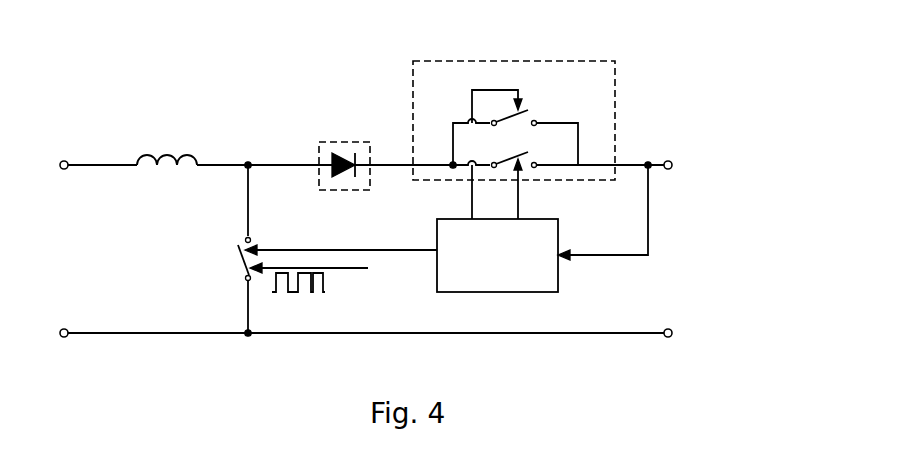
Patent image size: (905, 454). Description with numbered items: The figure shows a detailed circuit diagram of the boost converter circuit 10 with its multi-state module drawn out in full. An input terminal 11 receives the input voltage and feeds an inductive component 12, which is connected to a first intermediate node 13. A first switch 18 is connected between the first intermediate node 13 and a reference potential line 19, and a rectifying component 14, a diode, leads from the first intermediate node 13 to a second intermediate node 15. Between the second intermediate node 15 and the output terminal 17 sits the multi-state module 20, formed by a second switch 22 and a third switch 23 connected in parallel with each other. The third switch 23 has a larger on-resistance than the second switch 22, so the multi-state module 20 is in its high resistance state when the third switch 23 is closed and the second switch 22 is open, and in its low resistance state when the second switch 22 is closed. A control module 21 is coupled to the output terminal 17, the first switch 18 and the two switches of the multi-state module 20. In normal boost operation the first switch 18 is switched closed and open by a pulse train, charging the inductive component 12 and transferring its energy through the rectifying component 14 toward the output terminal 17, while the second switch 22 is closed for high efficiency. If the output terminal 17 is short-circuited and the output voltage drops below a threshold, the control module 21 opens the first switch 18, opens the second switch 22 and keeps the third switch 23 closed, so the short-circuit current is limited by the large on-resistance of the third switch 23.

The circuit 10 is at (692, 132).
The input terminal 11 is at (63, 160).
The inductive component 12 is at (176, 153).
The first intermediate node 13 is at (250, 162).
The rectifying component 14 is at (369, 148).
The second intermediate node 15 is at (451, 163).
The output terminal 17 is at (666, 161).
The first switch 18 is at (240, 268).
The reference potential line 19 is at (156, 333).
The multi-state module 20 is at (593, 71).
The control module 21 is at (548, 226).
The second switch 22 is at (514, 159).
The third switch 23 is at (524, 112).